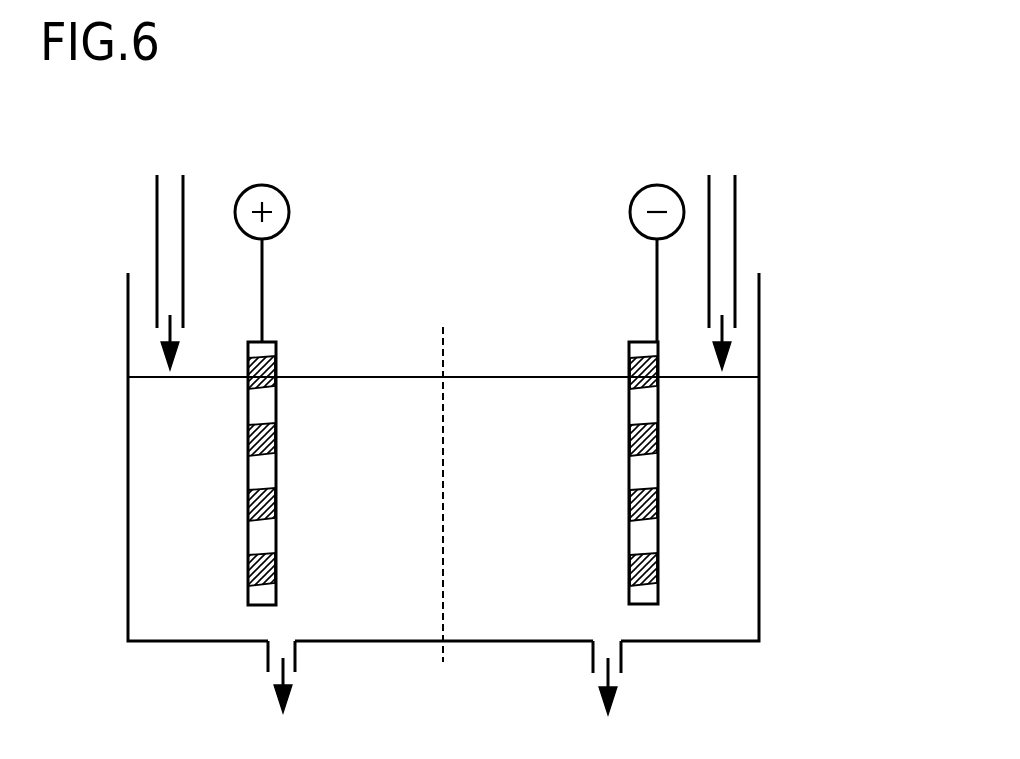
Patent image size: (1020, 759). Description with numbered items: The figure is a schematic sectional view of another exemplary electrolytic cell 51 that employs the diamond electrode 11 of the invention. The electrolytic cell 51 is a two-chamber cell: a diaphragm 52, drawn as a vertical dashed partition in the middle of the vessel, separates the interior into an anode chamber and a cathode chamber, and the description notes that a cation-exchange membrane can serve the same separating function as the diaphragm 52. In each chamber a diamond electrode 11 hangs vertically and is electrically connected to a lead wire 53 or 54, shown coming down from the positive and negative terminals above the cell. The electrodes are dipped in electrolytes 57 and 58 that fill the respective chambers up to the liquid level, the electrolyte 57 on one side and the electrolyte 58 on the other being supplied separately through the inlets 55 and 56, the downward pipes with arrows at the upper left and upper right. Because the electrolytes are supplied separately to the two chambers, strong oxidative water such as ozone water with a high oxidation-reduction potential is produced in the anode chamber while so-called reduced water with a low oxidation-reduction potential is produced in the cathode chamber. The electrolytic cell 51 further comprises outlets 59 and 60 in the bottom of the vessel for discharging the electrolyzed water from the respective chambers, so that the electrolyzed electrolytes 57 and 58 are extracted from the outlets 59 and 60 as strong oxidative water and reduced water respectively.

The diamond electrode 11 is at (247, 482).
The electrolytic cell 51 is at (872, 140).
The diaphragm 52 is at (445, 343).
The lead wire 53 is at (262, 267).
The lead wire 54 is at (655, 277).
The inlet 55 is at (157, 230).
The inlet 56 is at (735, 223).
The electrolyte 57 is at (362, 626).
The electrolyte 58 is at (692, 627).
The outlet 59 is at (268, 652).
The outlet 60 is at (593, 652).